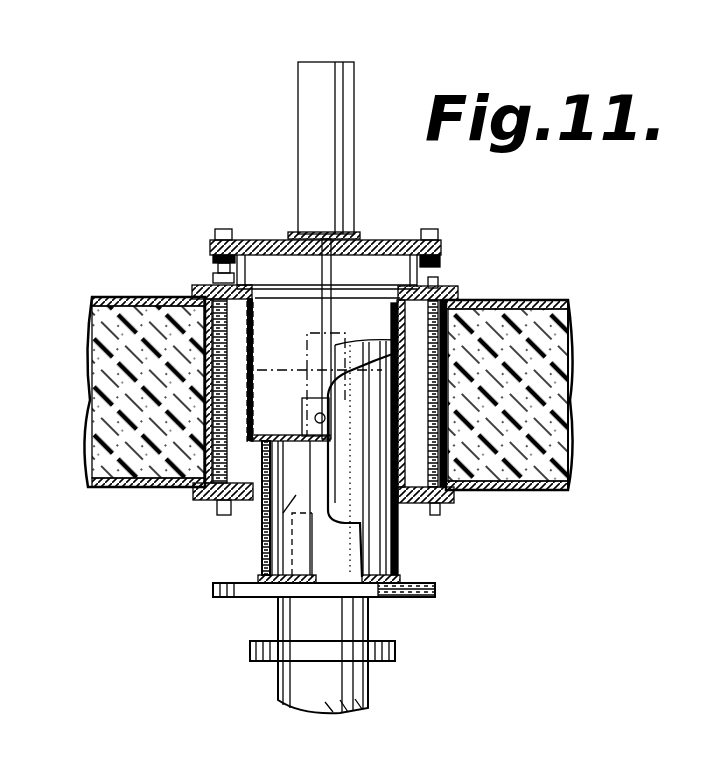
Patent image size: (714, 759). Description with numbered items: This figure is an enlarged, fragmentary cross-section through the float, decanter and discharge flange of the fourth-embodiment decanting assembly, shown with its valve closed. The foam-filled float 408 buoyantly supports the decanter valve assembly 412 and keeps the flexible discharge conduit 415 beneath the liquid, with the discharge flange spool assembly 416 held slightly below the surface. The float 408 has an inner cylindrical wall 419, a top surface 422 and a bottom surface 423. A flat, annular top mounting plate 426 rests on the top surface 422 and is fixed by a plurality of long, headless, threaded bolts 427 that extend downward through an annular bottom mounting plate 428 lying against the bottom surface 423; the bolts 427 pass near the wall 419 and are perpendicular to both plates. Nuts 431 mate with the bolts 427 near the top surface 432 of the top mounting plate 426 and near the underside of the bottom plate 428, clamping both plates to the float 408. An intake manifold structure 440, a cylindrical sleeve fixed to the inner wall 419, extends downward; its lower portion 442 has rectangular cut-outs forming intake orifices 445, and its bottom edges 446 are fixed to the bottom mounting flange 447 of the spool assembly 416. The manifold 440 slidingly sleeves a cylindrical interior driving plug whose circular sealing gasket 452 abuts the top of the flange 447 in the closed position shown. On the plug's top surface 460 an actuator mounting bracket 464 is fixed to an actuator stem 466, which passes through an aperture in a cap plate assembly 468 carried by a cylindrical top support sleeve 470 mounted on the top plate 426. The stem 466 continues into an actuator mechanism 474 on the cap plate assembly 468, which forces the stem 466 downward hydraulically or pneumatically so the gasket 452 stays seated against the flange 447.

The float 408 is at (291, 392).
The decanter valve assembly 412 is at (392, 199).
The flexible discharge conduit 415 is at (290, 693).
The discharge flange spool assembly 416 is at (382, 634).
The inner cylindrical wall 419 is at (200, 349).
The top surface 422 is at (560, 299).
The bottom surface 423 is at (553, 493).
The top mounting plate 426 is at (458, 289).
The threaded bolts 427 is at (200, 400).
The bottom mounting plate 428 is at (456, 505).
The nuts 431 is at (215, 500).
The top surface 432 is at (192, 288).
The intake manifold structure 440 is at (262, 528).
The lower portion 442 is at (392, 557).
The intake orifices 445 is at (343, 541).
The bottom edges 446 is at (425, 588).
The bottom mounting flange 447 is at (215, 592).
The sealing gasket 452 is at (258, 566).
The top surface 460 is at (286, 435).
The actuator mounting bracket 464 is at (306, 403).
The actuator stem 466 is at (332, 281).
The cap plate assembly 468 is at (255, 240).
The top support sleeve 470 is at (218, 262).
The actuator mechanism 474 is at (306, 122).